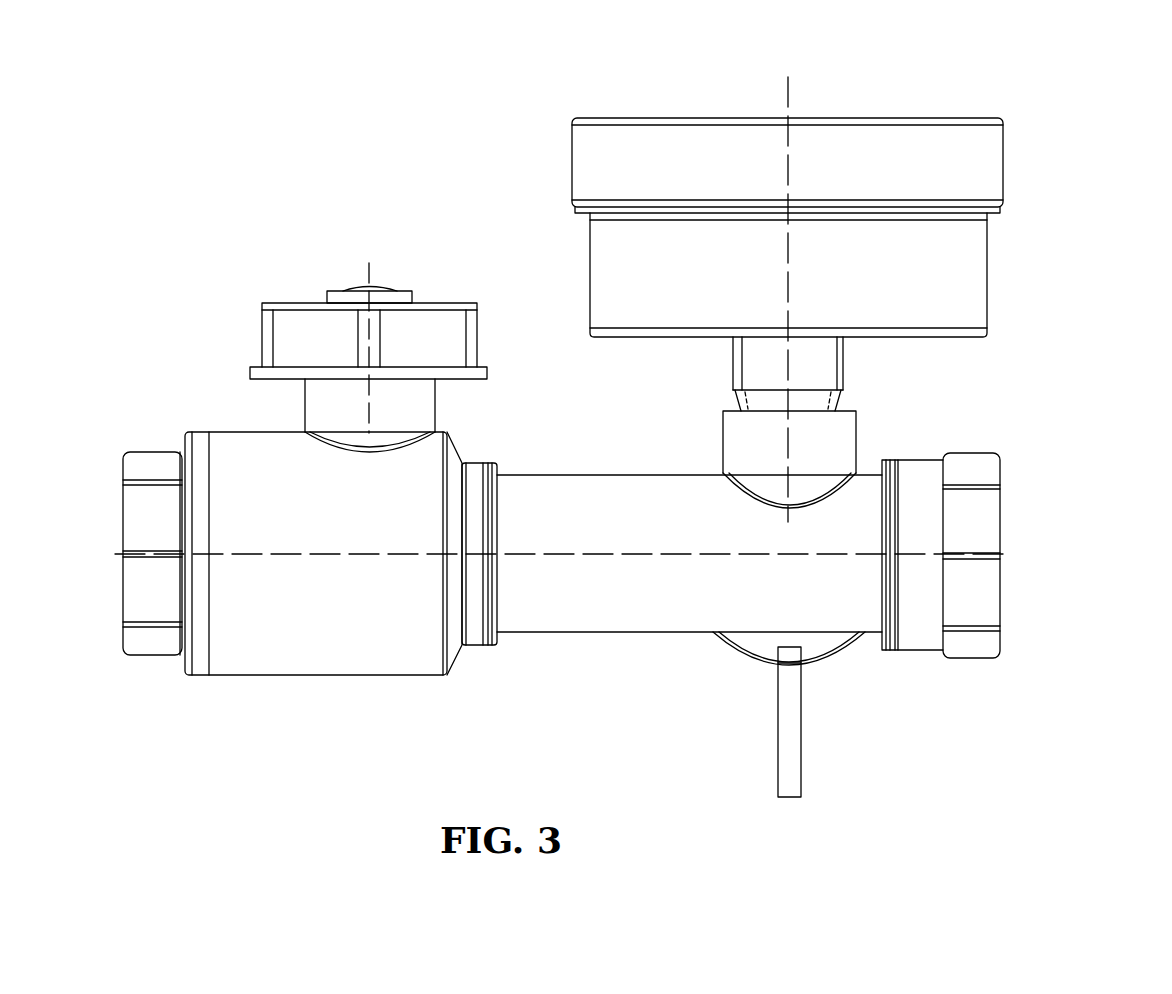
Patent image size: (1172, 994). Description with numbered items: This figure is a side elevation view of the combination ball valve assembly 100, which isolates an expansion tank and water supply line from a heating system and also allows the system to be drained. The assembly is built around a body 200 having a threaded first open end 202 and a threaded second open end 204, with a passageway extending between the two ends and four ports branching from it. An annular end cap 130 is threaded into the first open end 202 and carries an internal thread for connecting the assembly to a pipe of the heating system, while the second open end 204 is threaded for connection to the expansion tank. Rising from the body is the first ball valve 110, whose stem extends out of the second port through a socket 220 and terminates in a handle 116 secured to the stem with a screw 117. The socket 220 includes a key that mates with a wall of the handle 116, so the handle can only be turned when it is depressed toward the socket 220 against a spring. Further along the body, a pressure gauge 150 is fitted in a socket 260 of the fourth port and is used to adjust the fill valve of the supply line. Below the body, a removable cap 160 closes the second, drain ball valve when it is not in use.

The combination ball valve assembly 100 is at (348, 80).
The first ball valve 110 is at (447, 277).
The handle 116 is at (283, 330).
The screw 117 is at (342, 288).
The annular end cap 130 is at (153, 640).
The pressure gauge 150 is at (872, 142).
The removable cap 160 is at (785, 677).
The body 200 is at (636, 650).
The first open end 202 is at (213, 457).
The second open end 204 is at (1002, 533).
The socket 220 is at (413, 410).
The socket 260 is at (853, 432).